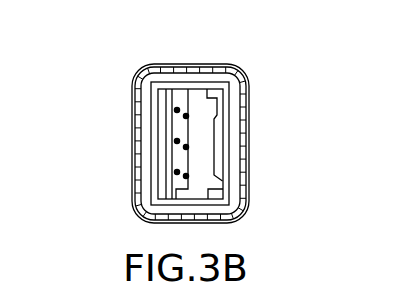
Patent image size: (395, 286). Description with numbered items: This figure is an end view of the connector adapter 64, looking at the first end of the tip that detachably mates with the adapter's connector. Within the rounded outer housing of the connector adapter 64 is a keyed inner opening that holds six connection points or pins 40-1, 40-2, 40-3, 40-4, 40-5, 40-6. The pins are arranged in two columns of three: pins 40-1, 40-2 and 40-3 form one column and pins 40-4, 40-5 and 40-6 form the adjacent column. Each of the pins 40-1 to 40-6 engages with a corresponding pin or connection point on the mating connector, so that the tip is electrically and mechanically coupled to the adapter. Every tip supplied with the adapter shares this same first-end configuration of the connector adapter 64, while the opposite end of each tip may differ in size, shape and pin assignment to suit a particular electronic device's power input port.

The connector adapter 64 is at (143, 77).
The connection point or pin 40-1 is at (177, 110).
The connection point or pin 40-2 is at (177, 141).
The connection point or pin 40-3 is at (177, 172).
The connection point or pin 40-4 is at (186, 176).
The connection point or pin 40-5 is at (186, 147).
The connection point or pin 40-6 is at (188, 116).